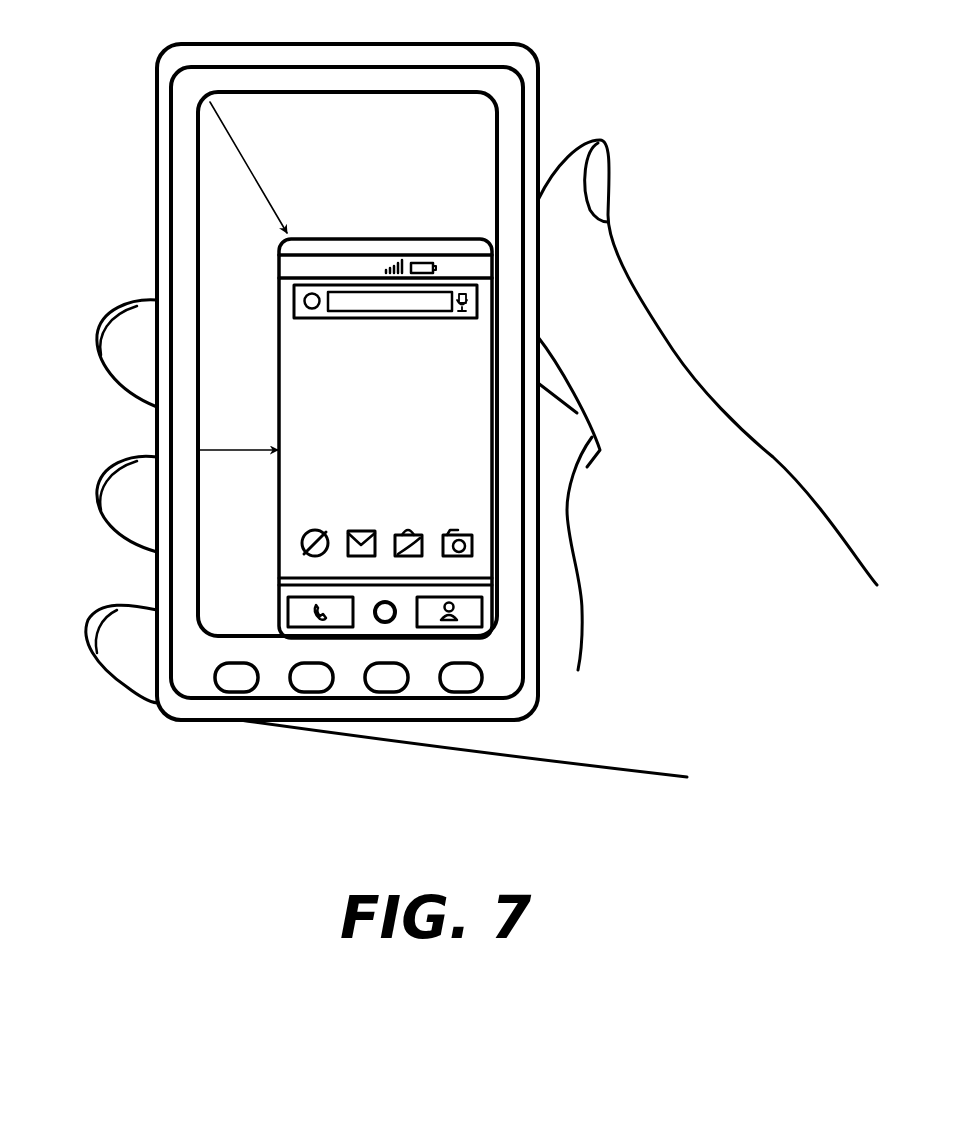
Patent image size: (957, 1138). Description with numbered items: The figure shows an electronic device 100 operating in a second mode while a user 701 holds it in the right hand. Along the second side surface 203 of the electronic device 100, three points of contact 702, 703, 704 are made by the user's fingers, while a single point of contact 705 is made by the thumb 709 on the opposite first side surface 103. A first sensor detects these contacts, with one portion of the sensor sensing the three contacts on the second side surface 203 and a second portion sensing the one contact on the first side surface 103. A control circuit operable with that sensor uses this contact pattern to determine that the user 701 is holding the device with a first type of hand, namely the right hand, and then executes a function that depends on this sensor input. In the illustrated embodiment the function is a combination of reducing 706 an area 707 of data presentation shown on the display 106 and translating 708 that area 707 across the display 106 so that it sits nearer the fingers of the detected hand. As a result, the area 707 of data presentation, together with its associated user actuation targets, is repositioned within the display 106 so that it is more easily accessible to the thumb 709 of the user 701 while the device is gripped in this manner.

The electronic device 100 is at (370, 365).
The first side surface 103 is at (549, 125).
The second side surface 203 is at (152, 210).
The display 106 is at (432, 134).
The user 701 is at (471, 442).
The point of contact 702 is at (155, 352).
The point of contact 703 is at (155, 500).
The point of contact 704 is at (155, 650).
The point of contact 705 is at (541, 242).
The reducing 706 is at (263, 185).
The area of data presentation 707 is at (385, 237).
The translating 708 is at (208, 446).
The thumb 709 is at (583, 298).